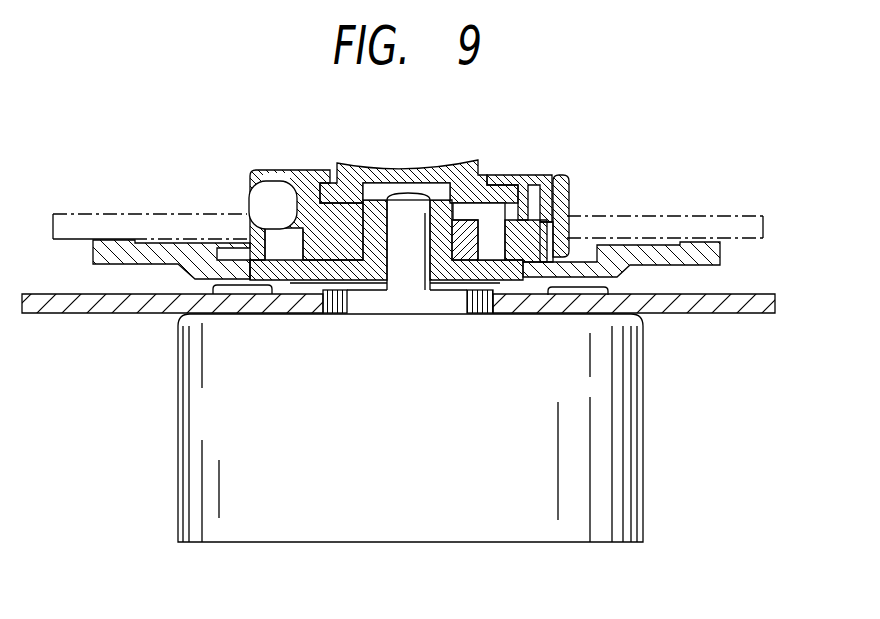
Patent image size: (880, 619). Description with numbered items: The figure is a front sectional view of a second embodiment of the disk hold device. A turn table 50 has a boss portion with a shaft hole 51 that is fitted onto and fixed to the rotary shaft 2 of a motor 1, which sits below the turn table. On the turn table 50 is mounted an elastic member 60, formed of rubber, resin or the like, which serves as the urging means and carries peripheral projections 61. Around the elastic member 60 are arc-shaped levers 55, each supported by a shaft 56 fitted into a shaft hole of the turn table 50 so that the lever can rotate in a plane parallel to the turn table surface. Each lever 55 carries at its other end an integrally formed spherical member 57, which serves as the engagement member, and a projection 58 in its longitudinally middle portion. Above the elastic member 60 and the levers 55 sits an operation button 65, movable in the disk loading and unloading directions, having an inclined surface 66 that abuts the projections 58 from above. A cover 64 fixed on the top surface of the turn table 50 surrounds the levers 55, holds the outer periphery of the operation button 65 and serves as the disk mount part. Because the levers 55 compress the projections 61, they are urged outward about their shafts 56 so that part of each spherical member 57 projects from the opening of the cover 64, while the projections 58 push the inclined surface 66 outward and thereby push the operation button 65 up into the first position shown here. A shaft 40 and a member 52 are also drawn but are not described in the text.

The motor 1 is at (640, 428).
The rotary shaft 2 is at (406, 237).
The shaft 40 is at (650, 214).
The turn table 50 is at (722, 253).
The shaft hole 51 is at (427, 258).
The holder block 52 is at (107, 241).
The lever 55 is at (548, 238).
The shaft 56 is at (543, 270).
The spherical member 57 is at (249, 198).
The projection 58 is at (503, 220).
The elastic member 60 is at (350, 253).
The projection 61 is at (311, 222).
The cover 64 is at (564, 174).
The operation button 65 is at (458, 178).
The inclined surface 66 is at (500, 207).